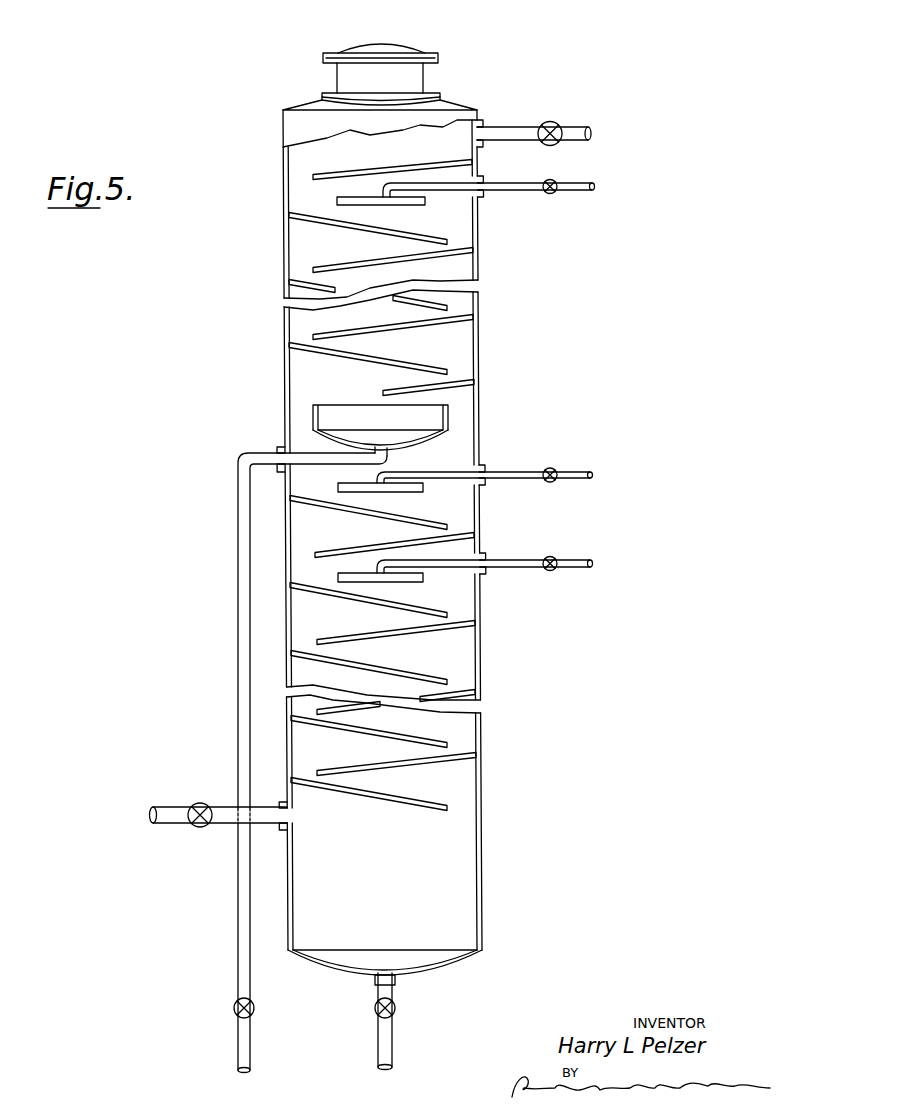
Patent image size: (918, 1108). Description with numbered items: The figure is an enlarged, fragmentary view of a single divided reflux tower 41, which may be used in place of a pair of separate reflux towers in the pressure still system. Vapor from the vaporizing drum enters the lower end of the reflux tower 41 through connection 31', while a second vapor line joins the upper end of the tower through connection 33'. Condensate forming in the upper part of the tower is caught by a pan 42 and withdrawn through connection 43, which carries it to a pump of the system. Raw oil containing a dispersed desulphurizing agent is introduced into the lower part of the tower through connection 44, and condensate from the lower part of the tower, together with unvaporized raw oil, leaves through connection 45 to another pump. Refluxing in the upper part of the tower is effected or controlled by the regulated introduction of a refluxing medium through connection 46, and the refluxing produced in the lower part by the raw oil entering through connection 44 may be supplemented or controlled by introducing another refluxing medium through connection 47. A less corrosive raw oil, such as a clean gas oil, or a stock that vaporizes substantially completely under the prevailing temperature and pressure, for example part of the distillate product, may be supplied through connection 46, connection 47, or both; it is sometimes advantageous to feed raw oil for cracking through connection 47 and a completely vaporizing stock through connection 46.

The reflux tower 41 is at (283, 383).
The pan 42 is at (448, 417).
The connection 43 is at (238, 677).
The connection 44 is at (528, 574).
The connection 45 is at (390, 1036).
The connection 46 is at (528, 190).
The connection 47 is at (530, 480).
The connection 33' is at (558, 119).
The connection 31' is at (208, 839).